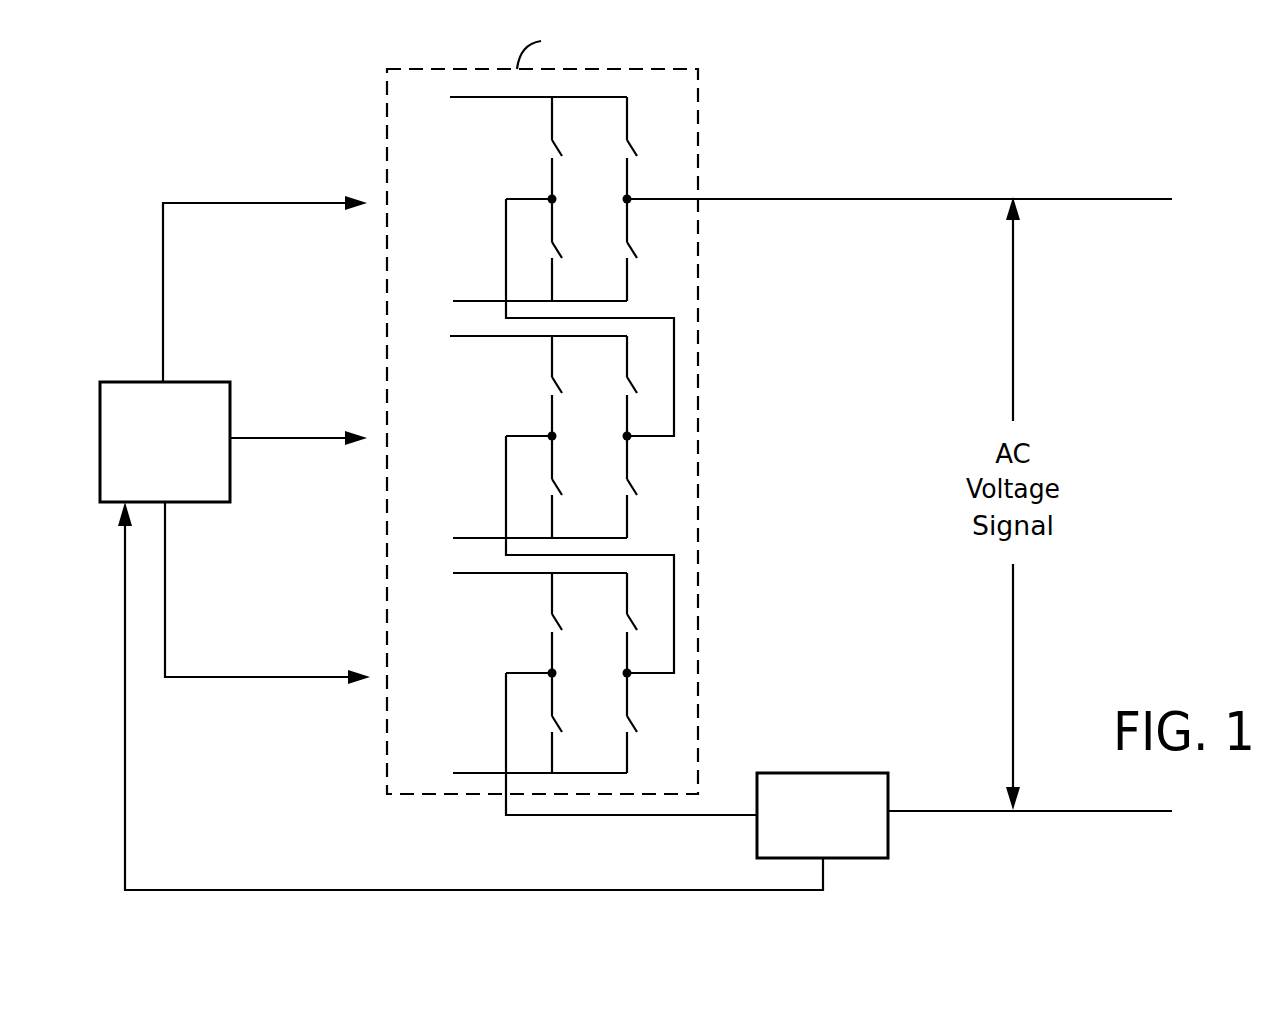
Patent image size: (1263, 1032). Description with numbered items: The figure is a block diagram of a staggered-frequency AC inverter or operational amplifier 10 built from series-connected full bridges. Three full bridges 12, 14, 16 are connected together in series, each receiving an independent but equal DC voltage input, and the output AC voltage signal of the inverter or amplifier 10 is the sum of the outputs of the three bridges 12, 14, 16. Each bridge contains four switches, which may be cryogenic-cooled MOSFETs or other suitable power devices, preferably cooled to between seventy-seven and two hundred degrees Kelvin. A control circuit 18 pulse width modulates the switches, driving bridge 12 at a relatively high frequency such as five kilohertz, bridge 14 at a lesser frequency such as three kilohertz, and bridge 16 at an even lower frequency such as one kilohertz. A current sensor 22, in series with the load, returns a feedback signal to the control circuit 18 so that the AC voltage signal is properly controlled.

The staggered-frequency AC inverter or operational amplifier 10 is at (842, 100).
The full bridge 12 is at (628, 654).
The full bridge 14 is at (627, 417).
The full bridge 16 is at (627, 180).
The control circuit 18 is at (130, 382).
The current sensor 22 is at (833, 773).